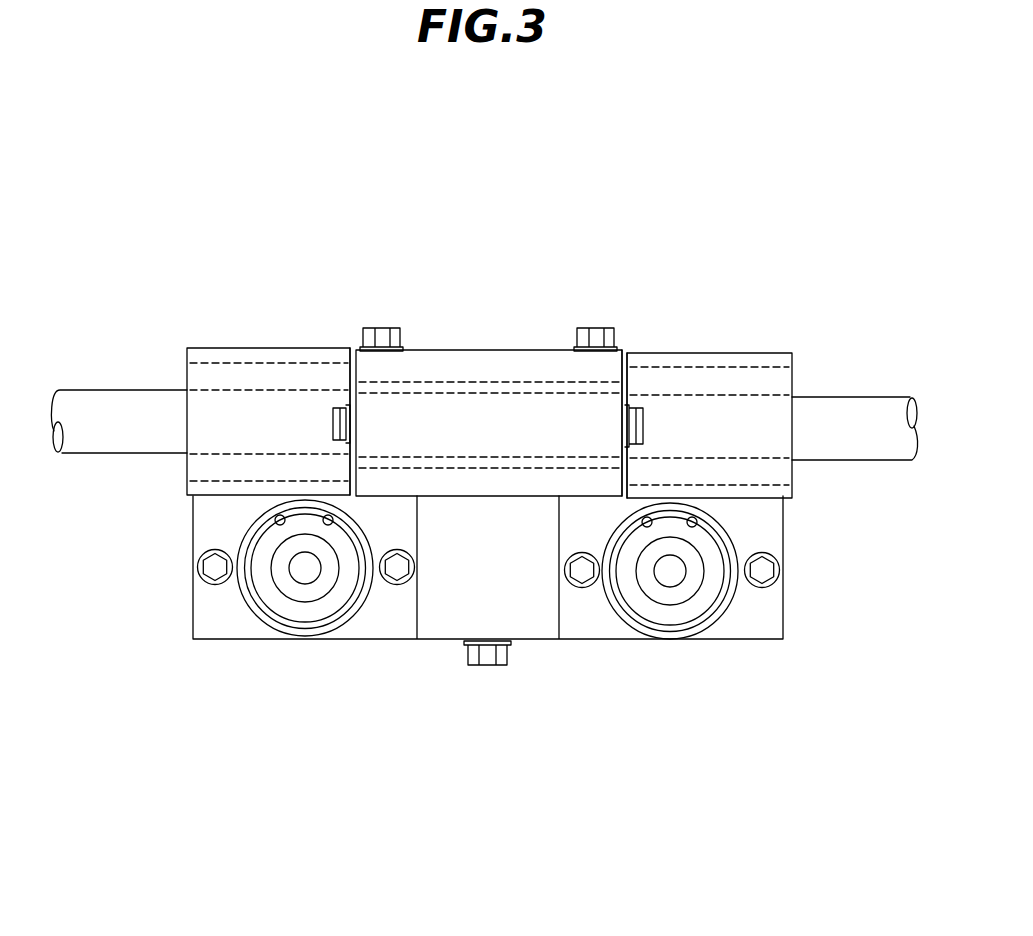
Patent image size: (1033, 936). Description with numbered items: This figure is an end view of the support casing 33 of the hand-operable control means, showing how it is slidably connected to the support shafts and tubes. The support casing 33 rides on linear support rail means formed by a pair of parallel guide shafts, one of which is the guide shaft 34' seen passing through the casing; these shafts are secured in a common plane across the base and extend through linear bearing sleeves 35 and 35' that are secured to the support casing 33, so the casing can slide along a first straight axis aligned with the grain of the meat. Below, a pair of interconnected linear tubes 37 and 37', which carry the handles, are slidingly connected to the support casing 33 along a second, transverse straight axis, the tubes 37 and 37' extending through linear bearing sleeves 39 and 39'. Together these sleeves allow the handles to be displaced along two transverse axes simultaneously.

The support casing 33 is at (493, 350).
The linear bearing sleeve 35 is at (268, 368).
The linear bearing sleeve 35' is at (708, 369).
The guide shaft 34' is at (485, 350).
The linear tube 37 is at (305, 662).
The linear tube 37' is at (670, 663).
The linear bearing sleeve 39 is at (325, 645).
The linear bearing sleeve 39' is at (642, 646).